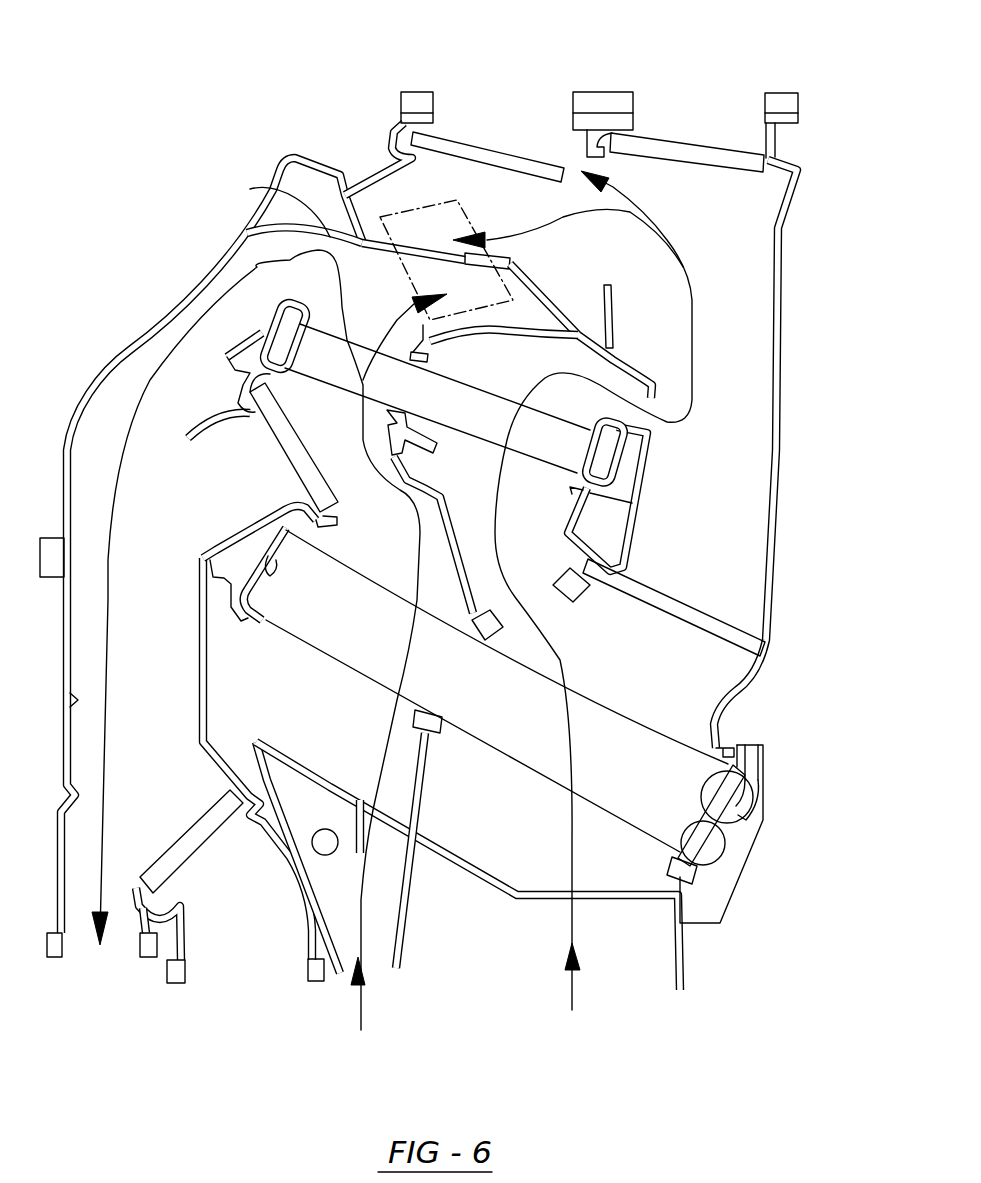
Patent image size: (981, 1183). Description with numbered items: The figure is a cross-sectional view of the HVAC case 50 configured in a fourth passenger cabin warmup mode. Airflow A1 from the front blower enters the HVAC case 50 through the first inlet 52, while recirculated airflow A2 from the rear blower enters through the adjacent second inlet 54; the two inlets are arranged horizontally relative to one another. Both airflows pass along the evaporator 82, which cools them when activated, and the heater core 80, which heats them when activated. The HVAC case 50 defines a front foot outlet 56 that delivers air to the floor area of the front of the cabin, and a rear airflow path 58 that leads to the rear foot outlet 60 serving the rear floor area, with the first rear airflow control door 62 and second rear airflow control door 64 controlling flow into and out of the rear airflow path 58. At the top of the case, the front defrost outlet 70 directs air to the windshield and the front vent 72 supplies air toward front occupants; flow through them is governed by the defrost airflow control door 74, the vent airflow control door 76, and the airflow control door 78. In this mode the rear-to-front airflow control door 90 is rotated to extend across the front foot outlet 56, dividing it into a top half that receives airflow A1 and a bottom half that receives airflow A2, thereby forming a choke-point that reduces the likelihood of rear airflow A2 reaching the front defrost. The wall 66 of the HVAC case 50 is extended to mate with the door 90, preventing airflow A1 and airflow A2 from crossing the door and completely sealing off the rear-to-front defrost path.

The HVAC case 50 is at (143, 128).
The first inlet 52 is at (677, 968).
The second inlet 54 is at (340, 968).
The front foot outlet 56 is at (417, 205).
The rear airflow path 58 is at (68, 697).
The rear foot outlet 60 is at (55, 942).
The first rear airflow control door 62 is at (300, 448).
The second rear airflow control door 64 is at (203, 823).
The wall 66 is at (503, 262).
The front defrost outlet 70 is at (573, 124).
The front vent 72 is at (765, 97).
The defrost airflow control door 74 is at (470, 142).
The vent airflow control door 76 is at (668, 133).
The airflow control door 78 is at (700, 620).
The heater core 80 is at (570, 452).
The evaporator 82 is at (650, 767).
The rear-to-front airflow control door 90 is at (250, 189).
The airflow A1 is at (572, 988).
The airflow A2 is at (360, 1002).